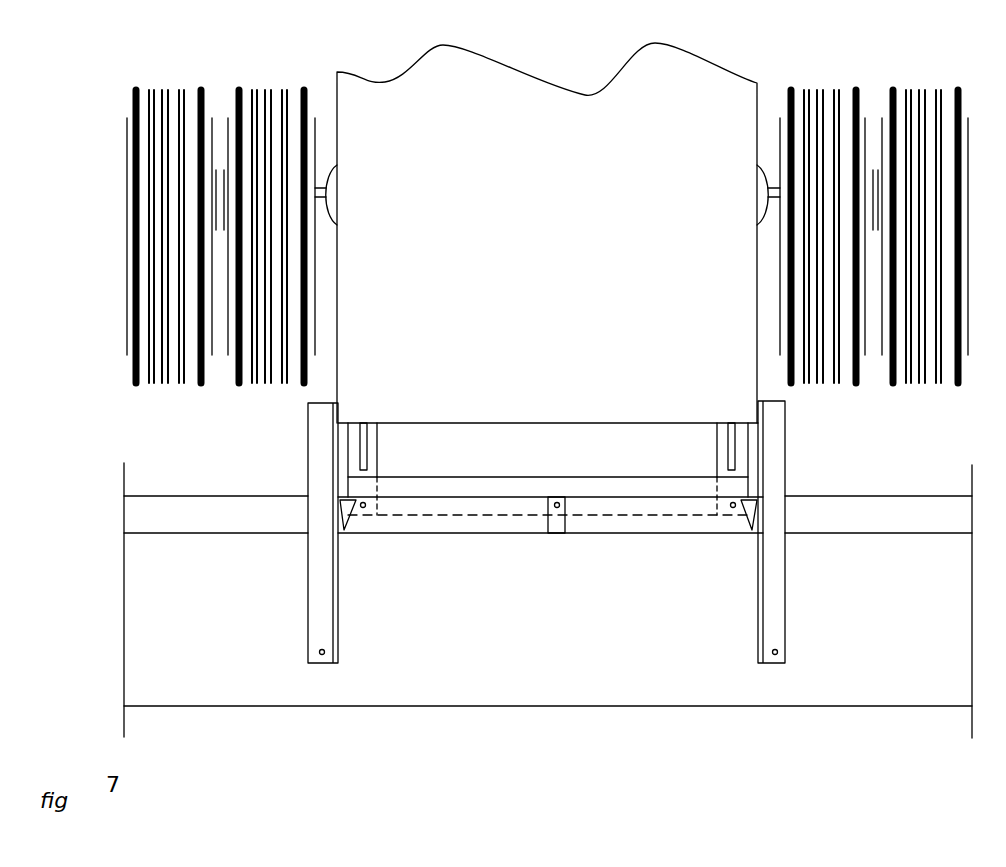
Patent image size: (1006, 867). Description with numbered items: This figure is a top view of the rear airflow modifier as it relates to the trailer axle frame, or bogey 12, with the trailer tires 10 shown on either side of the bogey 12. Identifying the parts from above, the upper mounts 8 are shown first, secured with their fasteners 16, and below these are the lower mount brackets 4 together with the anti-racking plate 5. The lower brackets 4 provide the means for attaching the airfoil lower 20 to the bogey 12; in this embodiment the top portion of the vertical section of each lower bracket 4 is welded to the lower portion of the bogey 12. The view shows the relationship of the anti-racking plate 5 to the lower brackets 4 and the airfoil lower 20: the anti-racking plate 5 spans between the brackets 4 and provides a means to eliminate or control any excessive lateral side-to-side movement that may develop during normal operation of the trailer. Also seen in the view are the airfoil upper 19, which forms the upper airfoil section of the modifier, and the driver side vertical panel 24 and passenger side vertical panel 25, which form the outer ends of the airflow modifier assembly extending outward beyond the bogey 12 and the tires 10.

The lower mount bracket 4 is at (370, 447).
The anti-racking plate 5 is at (523, 483).
The upper mount 8 is at (322, 468).
The trailer tires 10 is at (258, 87).
The trailer axle frame (bogey) 12 is at (553, 150).
The bar nut 16 is at (325, 655).
The airfoil upper 19 is at (565, 650).
The airfoil lower 20 is at (203, 512).
The driver side vertical panel 24 is at (972, 725).
The passenger side vertical panel 25 is at (124, 476).